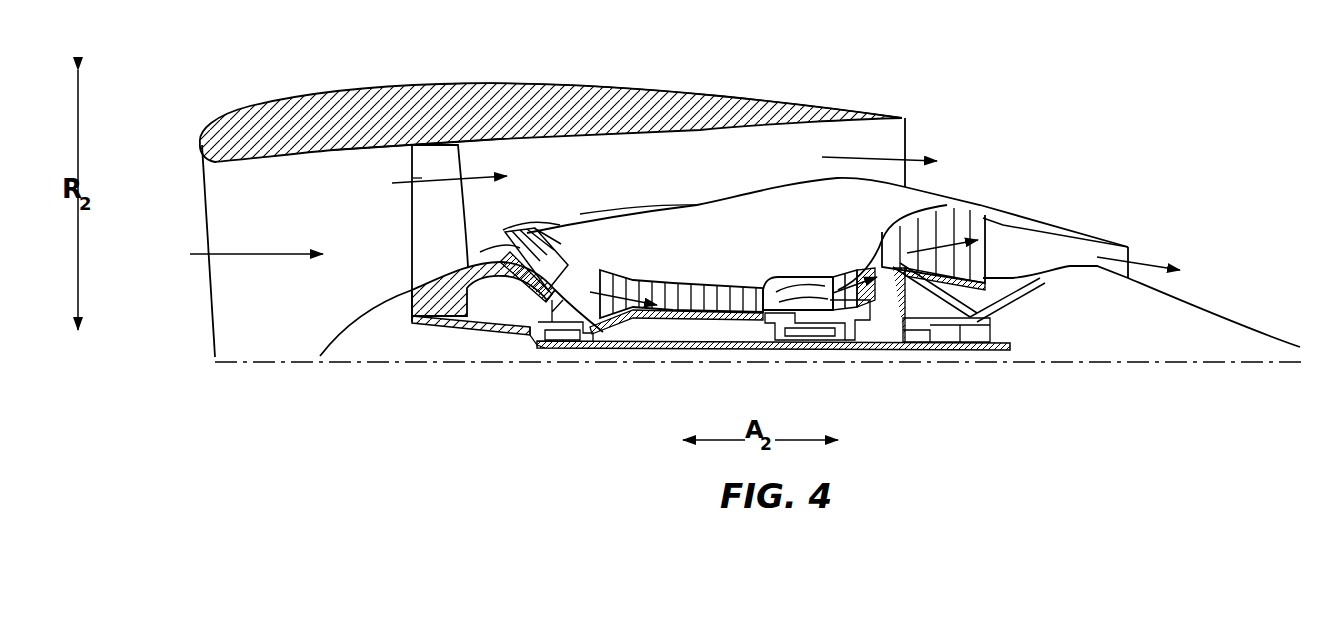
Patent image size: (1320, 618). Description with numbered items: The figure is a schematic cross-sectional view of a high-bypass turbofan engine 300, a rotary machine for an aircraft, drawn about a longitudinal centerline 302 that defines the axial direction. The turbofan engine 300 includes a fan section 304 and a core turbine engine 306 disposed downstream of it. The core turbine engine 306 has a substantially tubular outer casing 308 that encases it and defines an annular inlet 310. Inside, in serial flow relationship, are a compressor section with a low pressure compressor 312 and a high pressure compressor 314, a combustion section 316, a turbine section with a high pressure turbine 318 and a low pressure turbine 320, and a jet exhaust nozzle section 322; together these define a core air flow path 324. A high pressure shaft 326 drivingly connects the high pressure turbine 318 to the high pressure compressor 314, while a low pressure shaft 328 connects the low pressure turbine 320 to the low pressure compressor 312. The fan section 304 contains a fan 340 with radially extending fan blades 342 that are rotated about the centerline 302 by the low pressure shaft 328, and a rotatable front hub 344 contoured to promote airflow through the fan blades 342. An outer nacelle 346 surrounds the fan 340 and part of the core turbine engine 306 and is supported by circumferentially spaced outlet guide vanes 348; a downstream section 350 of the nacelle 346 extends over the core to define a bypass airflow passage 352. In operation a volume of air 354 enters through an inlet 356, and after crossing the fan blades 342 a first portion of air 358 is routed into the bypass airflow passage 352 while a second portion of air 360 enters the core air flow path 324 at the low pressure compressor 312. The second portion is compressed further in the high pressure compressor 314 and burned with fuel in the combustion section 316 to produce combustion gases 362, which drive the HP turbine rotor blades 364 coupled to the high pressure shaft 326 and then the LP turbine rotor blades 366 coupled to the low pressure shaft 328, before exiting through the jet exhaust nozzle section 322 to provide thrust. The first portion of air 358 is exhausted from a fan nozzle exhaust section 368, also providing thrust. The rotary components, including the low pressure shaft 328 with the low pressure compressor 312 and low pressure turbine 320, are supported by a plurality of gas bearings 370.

The turbofan engine 300 is at (1040, 100).
The longitudinal centerline 302 is at (1075, 362).
The fan section 304 is at (370, 173).
The core turbine engine 306 is at (726, 235).
The outer casing 308 is at (693, 205).
The annular inlet 310 is at (500, 240).
The low pressure compressor 312 is at (548, 238).
The high pressure compressor 314 is at (718, 271).
The combustion section 316 is at (776, 264).
The high pressure turbine 318 is at (850, 253).
The low pressure turbine 320 is at (938, 215).
The jet exhaust nozzle section 322 is at (1085, 245).
The core air flow path 324 is at (582, 272).
The high pressure shaft 326 is at (715, 322).
The low pressure shaft 328 is at (658, 348).
The fan 340 is at (400, 280).
The fan blades 342 is at (410, 233).
The rotatable front hub 344 is at (333, 333).
The outer nacelle 346 is at (457, 92).
The outlet guide vanes 348 is at (583, 143).
The downstream section of the nacelle 350 is at (848, 110).
The bypass airflow passage 352 is at (788, 164).
The volume of air 354 is at (246, 254).
The inlet 356 is at (200, 196).
The first portion of air 358 is at (420, 178).
The second portion of air 360 is at (525, 232).
The combustion gases 362 is at (848, 285).
The HP turbine rotor blades 364 is at (855, 268).
The LP turbine rotor blades 366 is at (957, 233).
The fan nozzle exhaust section 368 is at (887, 150).
The gas bearings 370 is at (525, 233).